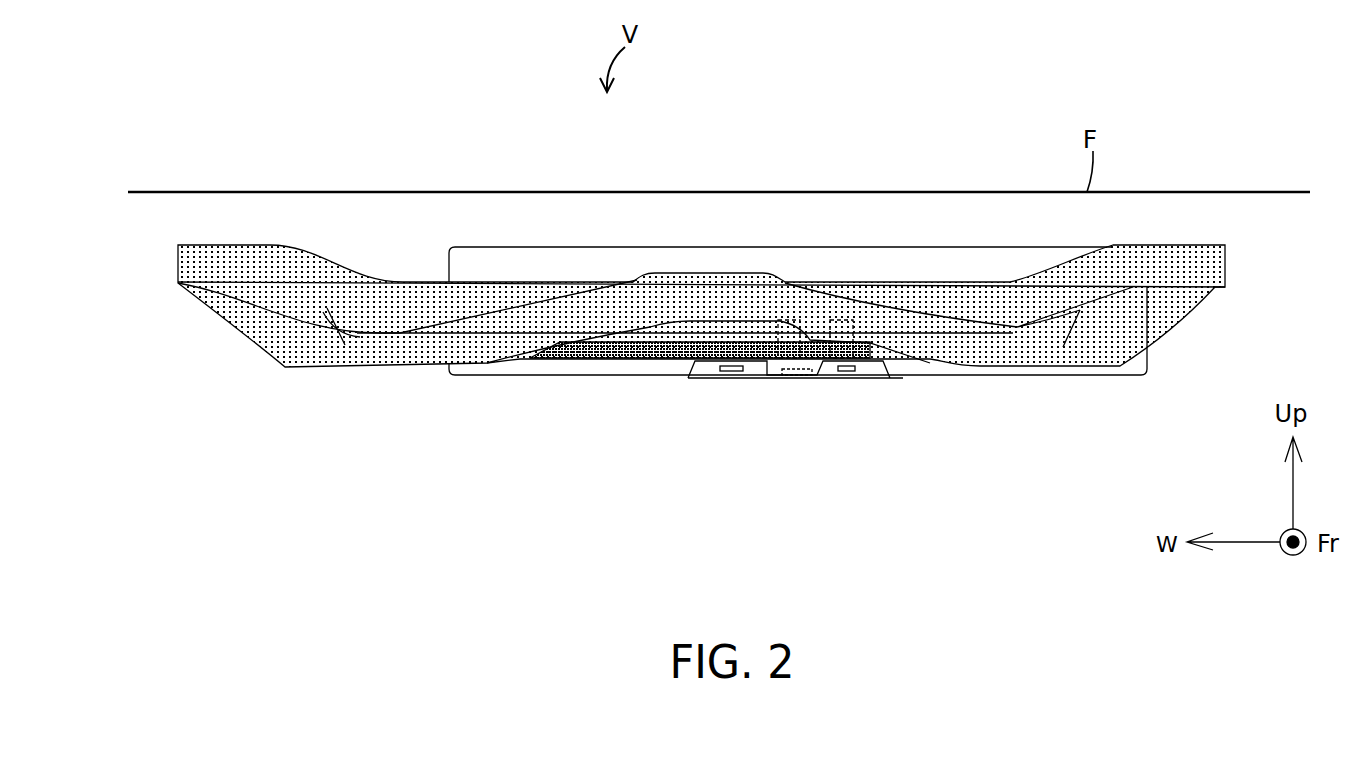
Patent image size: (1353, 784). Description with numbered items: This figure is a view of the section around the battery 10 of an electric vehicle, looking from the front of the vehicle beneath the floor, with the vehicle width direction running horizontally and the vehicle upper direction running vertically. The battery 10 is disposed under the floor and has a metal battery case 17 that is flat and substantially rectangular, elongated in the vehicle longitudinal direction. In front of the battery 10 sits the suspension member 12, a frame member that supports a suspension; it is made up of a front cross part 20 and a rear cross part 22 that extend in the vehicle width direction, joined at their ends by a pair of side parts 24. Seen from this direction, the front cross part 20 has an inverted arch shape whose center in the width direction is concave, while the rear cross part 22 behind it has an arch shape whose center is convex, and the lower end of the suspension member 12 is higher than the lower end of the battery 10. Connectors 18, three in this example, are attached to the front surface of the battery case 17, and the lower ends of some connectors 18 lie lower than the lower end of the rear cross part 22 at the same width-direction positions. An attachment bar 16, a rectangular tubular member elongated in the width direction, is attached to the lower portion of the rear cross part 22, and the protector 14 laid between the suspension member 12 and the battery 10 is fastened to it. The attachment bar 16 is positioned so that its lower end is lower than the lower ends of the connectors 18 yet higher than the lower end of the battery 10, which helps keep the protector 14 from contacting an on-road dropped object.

The battery 10 is at (798, 259).
The battery case 17 is at (875, 248).
The suspension member 12 is at (290, 220).
The protector 14 is at (712, 380).
The attachment bar 16 is at (612, 359).
The connector 18 is at (837, 362).
The front cross part 20 is at (408, 282).
The rear cross part 22 is at (398, 363).
The side part 24 is at (270, 317).